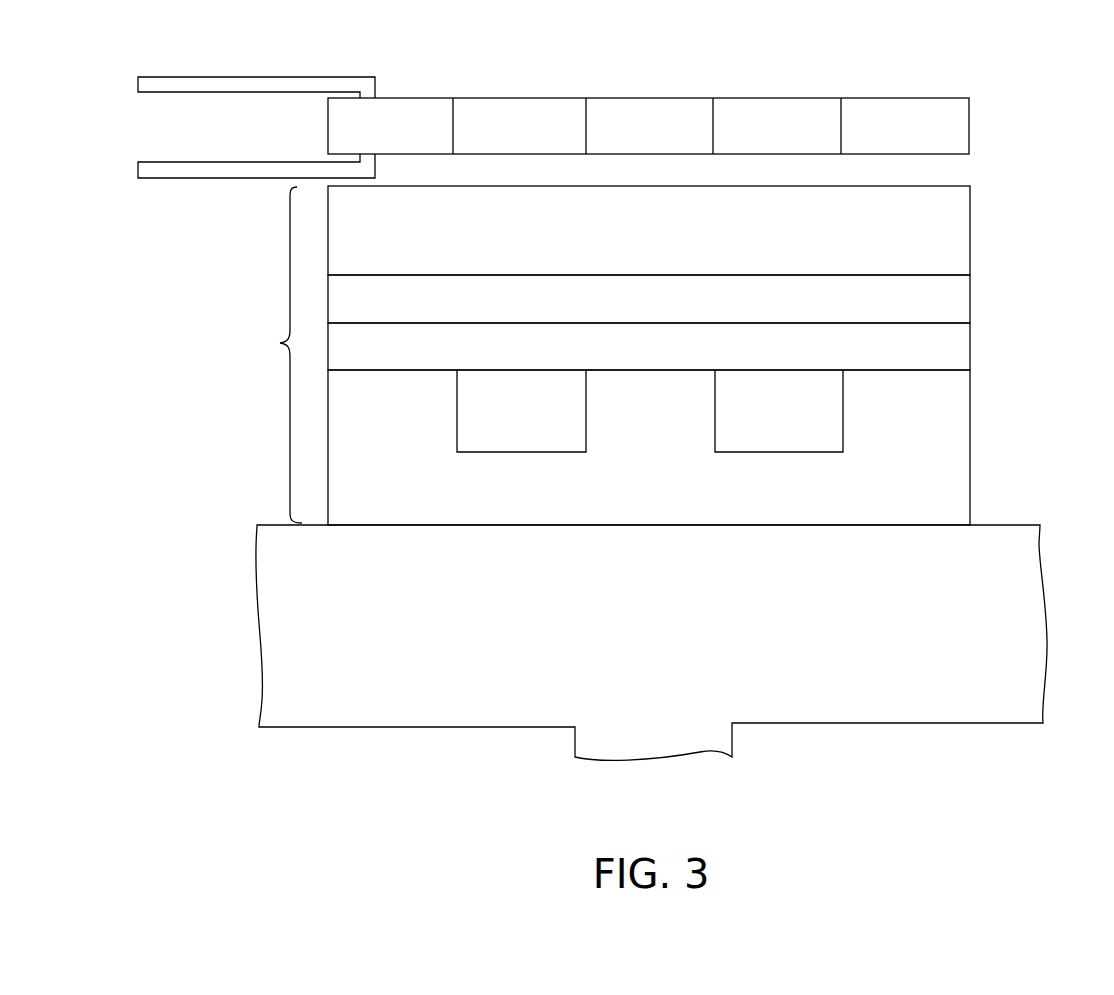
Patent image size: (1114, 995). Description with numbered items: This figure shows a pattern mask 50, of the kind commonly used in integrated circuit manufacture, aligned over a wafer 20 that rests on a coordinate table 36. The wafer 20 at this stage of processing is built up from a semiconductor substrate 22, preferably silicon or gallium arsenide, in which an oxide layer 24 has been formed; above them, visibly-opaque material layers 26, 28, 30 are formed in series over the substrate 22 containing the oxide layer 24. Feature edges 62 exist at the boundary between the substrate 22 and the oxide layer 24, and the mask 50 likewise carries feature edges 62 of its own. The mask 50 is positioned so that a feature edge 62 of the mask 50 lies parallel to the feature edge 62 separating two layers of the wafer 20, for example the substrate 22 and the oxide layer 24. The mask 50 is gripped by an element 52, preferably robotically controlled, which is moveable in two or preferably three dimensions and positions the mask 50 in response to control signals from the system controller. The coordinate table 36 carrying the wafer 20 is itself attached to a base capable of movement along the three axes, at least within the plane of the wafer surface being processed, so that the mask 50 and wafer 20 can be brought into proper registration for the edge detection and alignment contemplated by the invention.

The wafer 20 is at (276, 355).
The semiconductor substrate 22 is at (953, 462).
The oxide layer 24 is at (516, 452).
The visibly-opaque material layer 26 is at (953, 352).
The visibly-opaque material layer 28 is at (953, 308).
The visibly-opaque material layer 30 is at (953, 235).
The coordinate table 36 is at (1027, 632).
The pattern mask 50 is at (328, 132).
The element 52 is at (288, 77).
The feature edge 62 is at (453, 130).